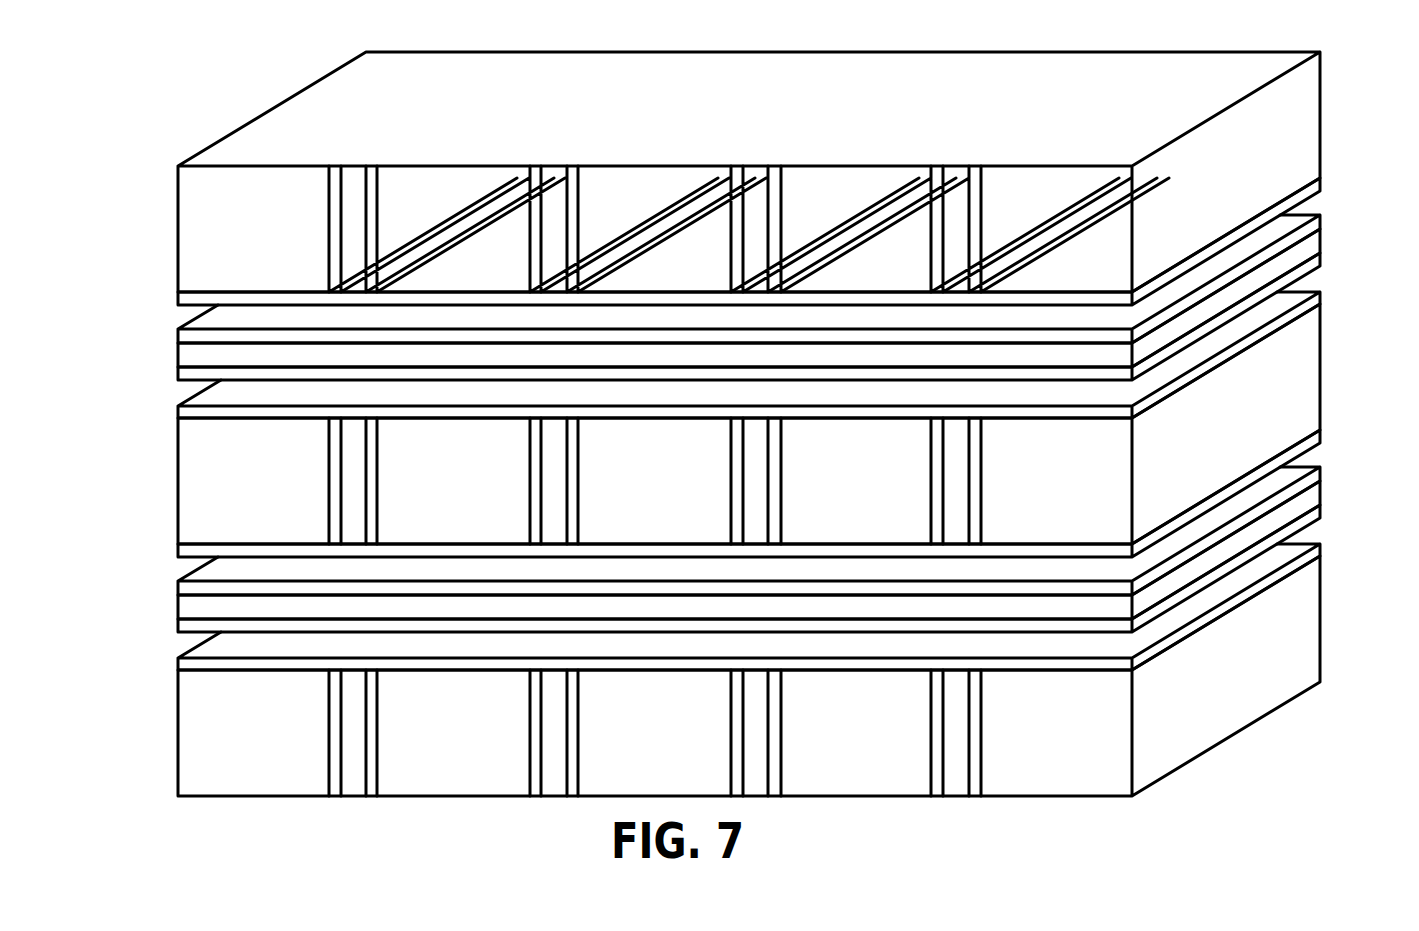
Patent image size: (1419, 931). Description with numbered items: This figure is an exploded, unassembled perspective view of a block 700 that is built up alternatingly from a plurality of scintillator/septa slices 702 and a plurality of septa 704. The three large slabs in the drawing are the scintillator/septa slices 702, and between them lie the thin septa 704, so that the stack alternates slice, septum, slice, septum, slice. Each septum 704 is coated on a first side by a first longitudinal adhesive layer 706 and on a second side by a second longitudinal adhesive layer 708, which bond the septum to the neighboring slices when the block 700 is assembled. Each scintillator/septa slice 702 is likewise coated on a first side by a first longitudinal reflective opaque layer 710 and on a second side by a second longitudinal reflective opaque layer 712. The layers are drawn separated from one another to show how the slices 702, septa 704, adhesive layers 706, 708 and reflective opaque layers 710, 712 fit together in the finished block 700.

The block 700 is at (176, 122).
The scintillator/septa slice 702 is at (1270, 168).
The septum 704 is at (203, 355).
The first longitudinal adhesive layer 706 is at (196, 338).
The second longitudinal adhesive layer 708 is at (218, 380).
The first longitudinal reflective opaque layer 710 is at (195, 298).
The second longitudinal reflective opaque layer 712 is at (188, 415).